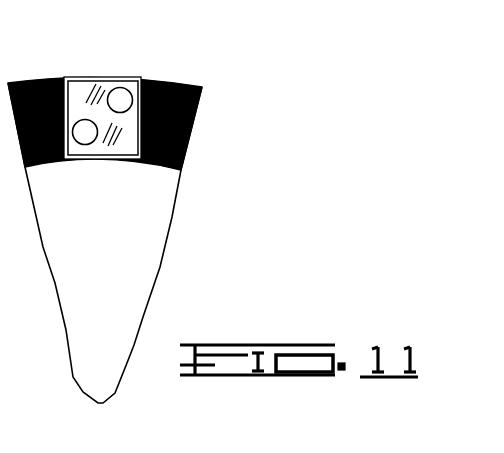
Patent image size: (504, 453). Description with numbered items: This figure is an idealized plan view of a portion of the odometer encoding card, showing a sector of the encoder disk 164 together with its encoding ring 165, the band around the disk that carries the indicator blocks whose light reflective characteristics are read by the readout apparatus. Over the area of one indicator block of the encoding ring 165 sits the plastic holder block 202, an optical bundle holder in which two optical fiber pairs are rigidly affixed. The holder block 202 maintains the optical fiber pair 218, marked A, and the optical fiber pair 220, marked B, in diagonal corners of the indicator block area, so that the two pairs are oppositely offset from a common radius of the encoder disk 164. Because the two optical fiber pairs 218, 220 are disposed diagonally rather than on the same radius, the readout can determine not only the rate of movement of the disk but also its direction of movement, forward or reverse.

The encoder disk 164 is at (153, 213).
The encoding ring 165 is at (190, 132).
The plastic holder block 202 is at (86, 92).
The optical fiber pair 218 is at (85, 144).
The optical fiber pair 220 is at (128, 89).